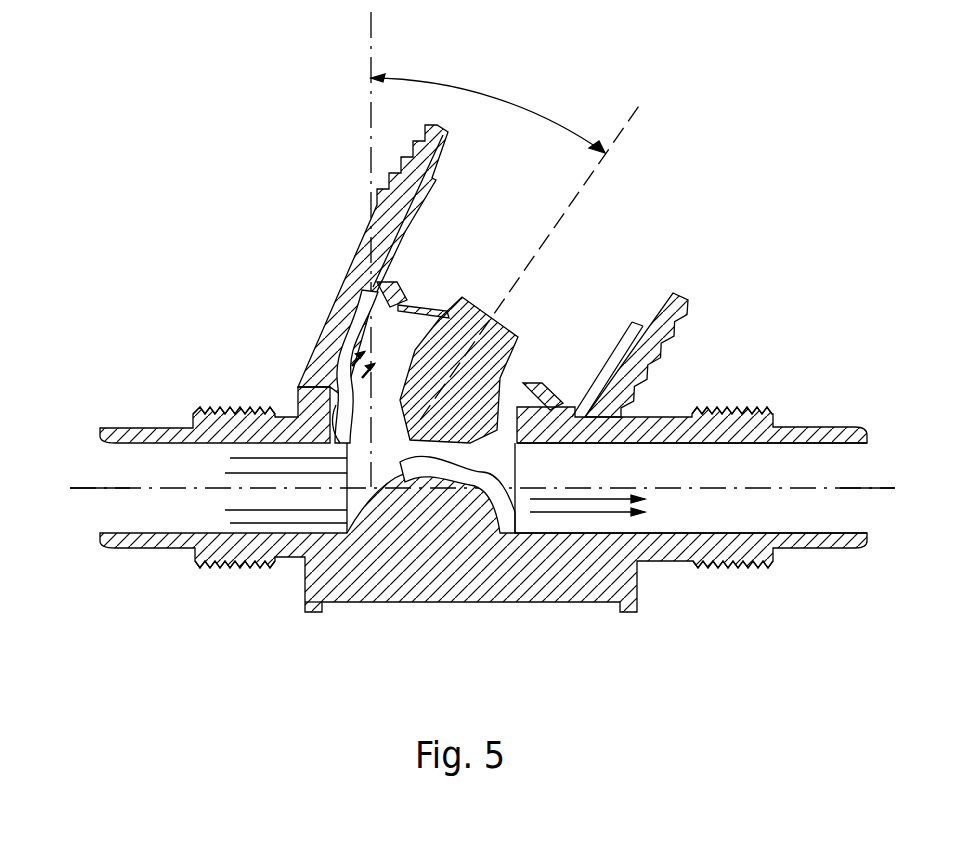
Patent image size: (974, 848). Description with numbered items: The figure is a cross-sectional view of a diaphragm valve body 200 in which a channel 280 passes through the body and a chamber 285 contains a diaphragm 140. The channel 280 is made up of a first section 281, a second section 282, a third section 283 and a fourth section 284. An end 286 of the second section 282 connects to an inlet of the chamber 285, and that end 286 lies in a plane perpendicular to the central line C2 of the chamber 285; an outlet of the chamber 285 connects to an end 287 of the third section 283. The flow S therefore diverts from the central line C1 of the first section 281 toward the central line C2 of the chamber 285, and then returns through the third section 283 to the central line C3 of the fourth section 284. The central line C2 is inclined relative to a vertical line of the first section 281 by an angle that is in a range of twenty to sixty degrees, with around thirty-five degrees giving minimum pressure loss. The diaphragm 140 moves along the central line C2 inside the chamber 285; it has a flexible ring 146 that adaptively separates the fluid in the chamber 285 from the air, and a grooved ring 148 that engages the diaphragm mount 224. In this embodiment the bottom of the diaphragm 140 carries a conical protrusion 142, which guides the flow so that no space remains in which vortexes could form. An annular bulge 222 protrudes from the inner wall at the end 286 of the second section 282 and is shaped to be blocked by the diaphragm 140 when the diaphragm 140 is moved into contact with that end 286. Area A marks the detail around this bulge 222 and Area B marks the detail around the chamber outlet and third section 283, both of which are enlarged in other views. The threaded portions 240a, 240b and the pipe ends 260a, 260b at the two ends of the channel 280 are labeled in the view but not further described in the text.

The valve assembly 200 is at (936, 75).
The diaphragm 140 is at (495, 330).
The conical protrusion 142 is at (400, 485).
The flexible ring 146 is at (402, 310).
The grooved ring 148 is at (397, 285).
The annular bulge 222 is at (355, 415).
The diaphragm mount 224 is at (380, 285).
The left threaded portion 240a is at (203, 410).
The right threaded portion 240b is at (743, 407).
The left pipe end 260a is at (127, 427).
The right pipe end 260b is at (813, 425).
The channel 280 is at (125, 488).
The first section 281 is at (223, 473).
The second section 282 is at (306, 605).
The third section 283 is at (503, 437).
The fourth section 284 is at (723, 475).
The chamber 285 is at (505, 480).
The end of the second section 286 is at (337, 420).
The end of the third section 287 is at (480, 447).
The Area A is at (355, 380).
The Area B is at (470, 490).
The flow S is at (599, 504).
The central line of the first section C1 is at (97, 490).
The central line of the chamber C2 is at (571, 203).
The central line of the fourth section C3 is at (873, 488).